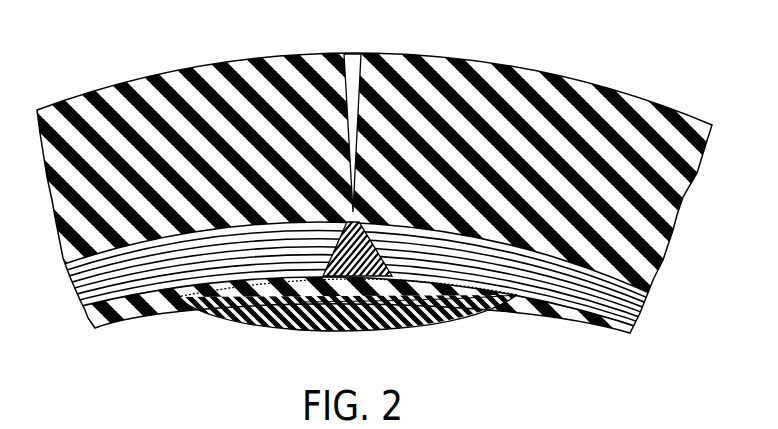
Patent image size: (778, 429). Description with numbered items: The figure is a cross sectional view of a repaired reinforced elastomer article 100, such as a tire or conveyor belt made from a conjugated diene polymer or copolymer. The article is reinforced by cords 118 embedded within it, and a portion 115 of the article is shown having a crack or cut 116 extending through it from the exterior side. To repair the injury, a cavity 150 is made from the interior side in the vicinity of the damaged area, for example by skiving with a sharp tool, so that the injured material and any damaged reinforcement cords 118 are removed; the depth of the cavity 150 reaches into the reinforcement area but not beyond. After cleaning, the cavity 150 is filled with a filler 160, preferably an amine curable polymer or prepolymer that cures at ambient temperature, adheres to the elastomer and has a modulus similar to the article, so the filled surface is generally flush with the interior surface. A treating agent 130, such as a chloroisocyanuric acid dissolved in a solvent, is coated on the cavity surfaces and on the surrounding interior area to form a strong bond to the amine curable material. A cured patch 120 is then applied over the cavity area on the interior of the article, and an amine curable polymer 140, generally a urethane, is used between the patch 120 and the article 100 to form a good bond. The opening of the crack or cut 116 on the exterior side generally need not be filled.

The elastomer article 100 is at (389, 214).
The portion of the article 115 is at (615, 122).
The crack or cut 116 is at (369, 30).
The cords 118 is at (370, 290).
The cured patch 120 is at (345, 327).
The treating agent 130 is at (507, 300).
The amine curable polymer 140 is at (420, 332).
The cavity 150 is at (240, 322).
The filler 160 is at (352, 330).